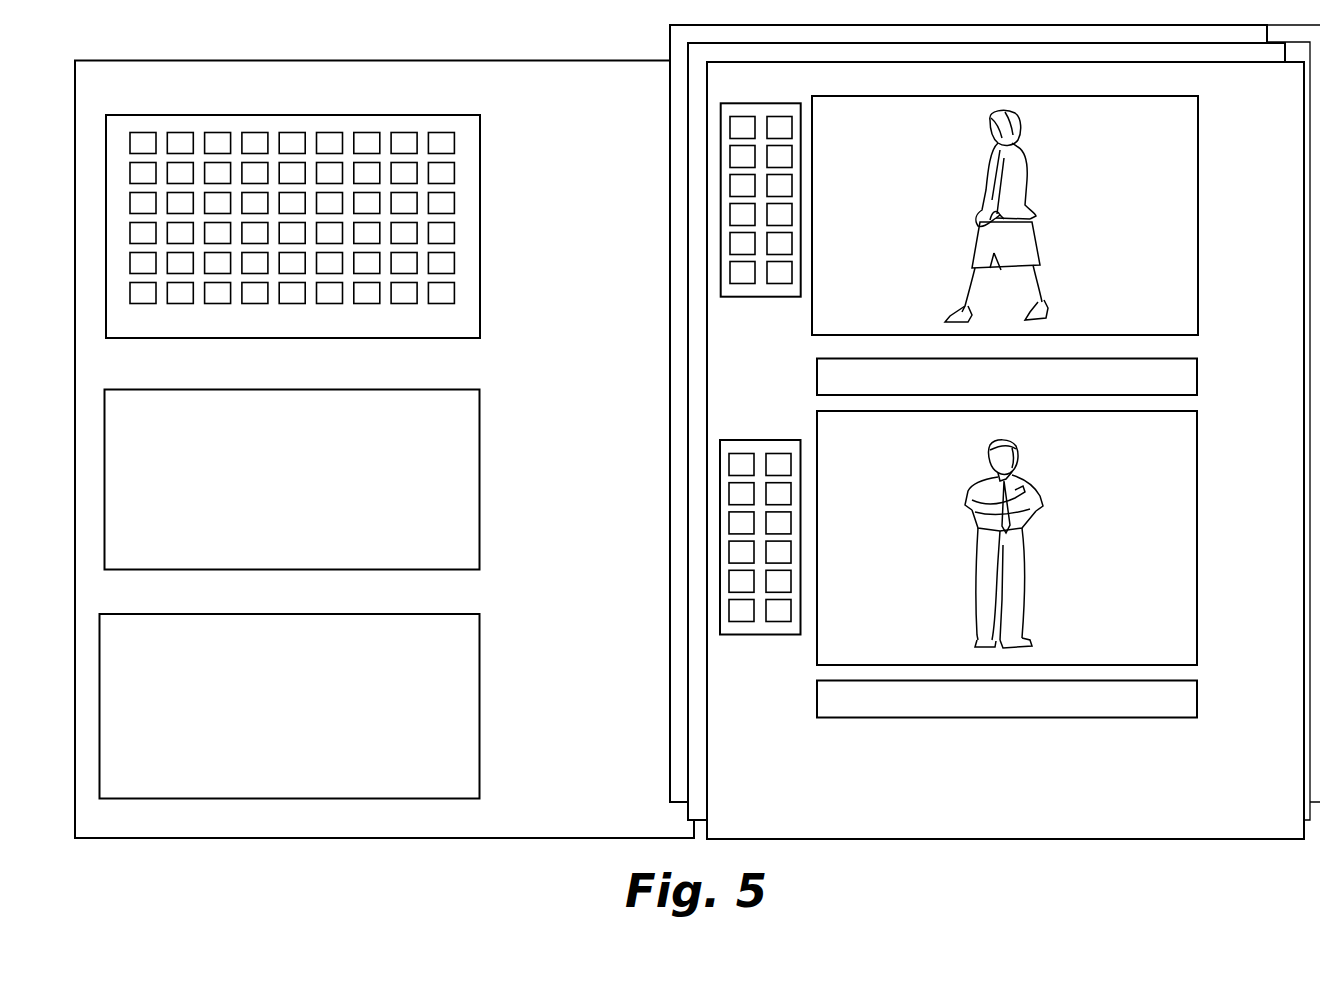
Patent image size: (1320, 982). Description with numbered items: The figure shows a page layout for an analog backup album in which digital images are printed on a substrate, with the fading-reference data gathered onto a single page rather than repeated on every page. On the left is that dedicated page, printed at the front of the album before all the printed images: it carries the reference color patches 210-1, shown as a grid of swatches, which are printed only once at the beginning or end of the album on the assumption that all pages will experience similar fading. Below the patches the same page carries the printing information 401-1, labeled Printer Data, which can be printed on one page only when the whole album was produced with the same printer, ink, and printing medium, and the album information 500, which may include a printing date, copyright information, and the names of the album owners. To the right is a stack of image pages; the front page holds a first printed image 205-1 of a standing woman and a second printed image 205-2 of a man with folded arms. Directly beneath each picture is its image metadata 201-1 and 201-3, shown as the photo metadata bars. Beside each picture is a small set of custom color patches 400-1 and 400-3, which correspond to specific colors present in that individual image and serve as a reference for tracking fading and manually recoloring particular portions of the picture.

The reference color patches 210-1 is at (480, 193).
The printing information 401-1 is at (480, 481).
The album information 500 is at (480, 708).
The custom color patches 400-1 is at (736, 297).
The custom color patches 400-3 is at (736, 636).
The printed image 205-1 is at (1198, 171).
The printed image 205-2 is at (1197, 501).
The image metadata 201-1 is at (1197, 380).
The image metadata 201-3 is at (1197, 697).